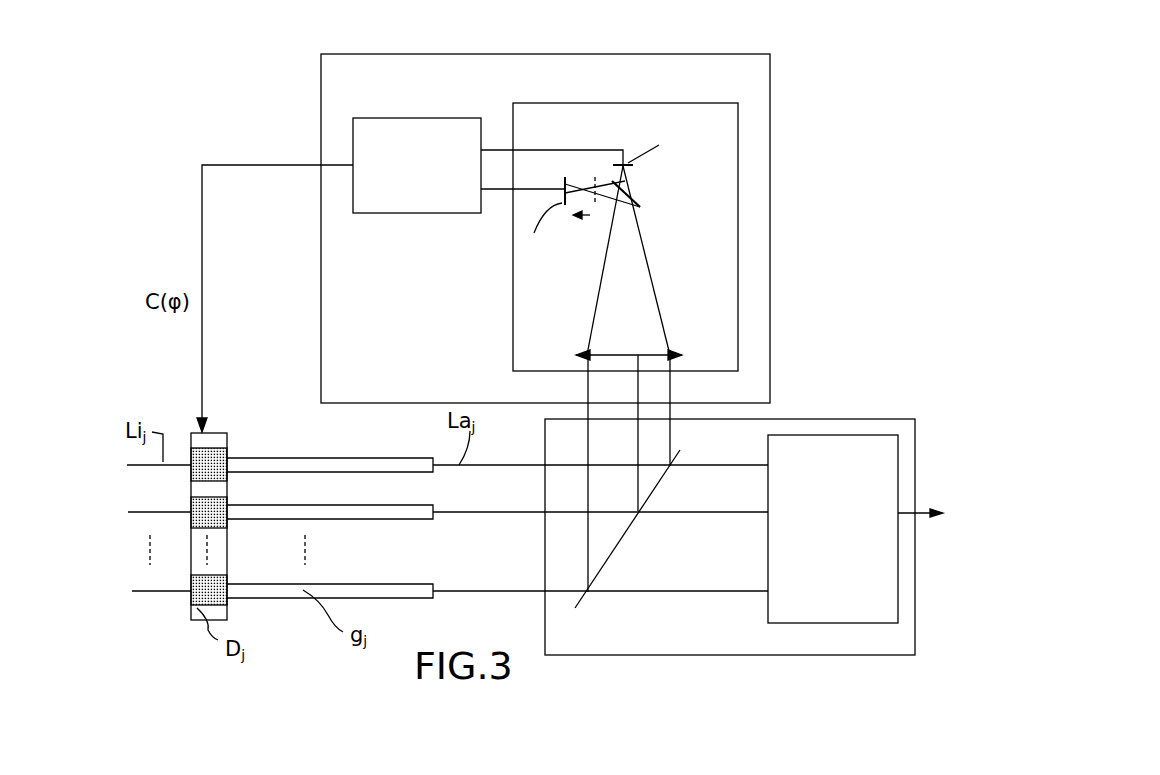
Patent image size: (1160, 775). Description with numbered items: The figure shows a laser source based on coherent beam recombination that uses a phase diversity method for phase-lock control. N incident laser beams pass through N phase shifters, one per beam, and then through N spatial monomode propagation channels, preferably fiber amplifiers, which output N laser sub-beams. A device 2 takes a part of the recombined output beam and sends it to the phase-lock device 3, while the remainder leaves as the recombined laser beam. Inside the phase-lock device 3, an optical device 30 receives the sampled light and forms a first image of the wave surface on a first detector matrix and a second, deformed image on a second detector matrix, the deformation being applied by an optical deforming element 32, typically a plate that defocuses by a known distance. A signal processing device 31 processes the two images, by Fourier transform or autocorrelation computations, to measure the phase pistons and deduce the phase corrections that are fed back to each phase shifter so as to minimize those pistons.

The device for taking a part of the output beam 2 is at (838, 418).
The phase-lock device 3 is at (770, 143).
The optical device 30 is at (712, 117).
The signal processing device 31 is at (455, 129).
The optical deforming element 32 is at (631, 197).